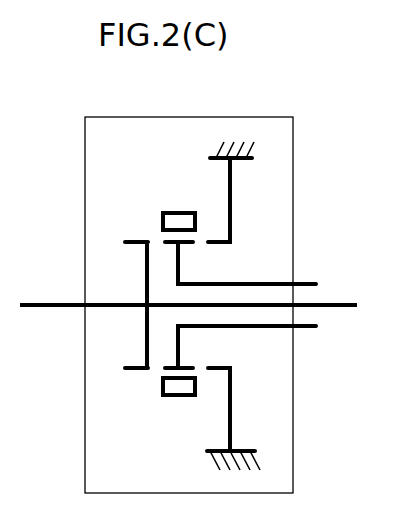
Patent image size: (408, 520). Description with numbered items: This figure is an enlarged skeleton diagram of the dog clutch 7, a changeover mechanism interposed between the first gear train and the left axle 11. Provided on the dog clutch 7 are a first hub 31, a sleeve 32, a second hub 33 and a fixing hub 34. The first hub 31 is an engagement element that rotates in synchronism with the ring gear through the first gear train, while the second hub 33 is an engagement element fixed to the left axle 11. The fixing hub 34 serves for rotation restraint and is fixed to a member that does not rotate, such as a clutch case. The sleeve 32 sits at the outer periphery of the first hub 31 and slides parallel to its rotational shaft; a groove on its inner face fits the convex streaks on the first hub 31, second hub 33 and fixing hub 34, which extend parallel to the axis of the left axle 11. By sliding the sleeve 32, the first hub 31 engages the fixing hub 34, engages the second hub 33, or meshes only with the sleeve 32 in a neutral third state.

The dog clutch 7 is at (85, 205).
The left axle 11 is at (345, 300).
The first hub 31 is at (181, 262).
The sleeve 32 is at (172, 210).
The second hub 33 is at (131, 240).
The fixing hub 34 is at (233, 206).